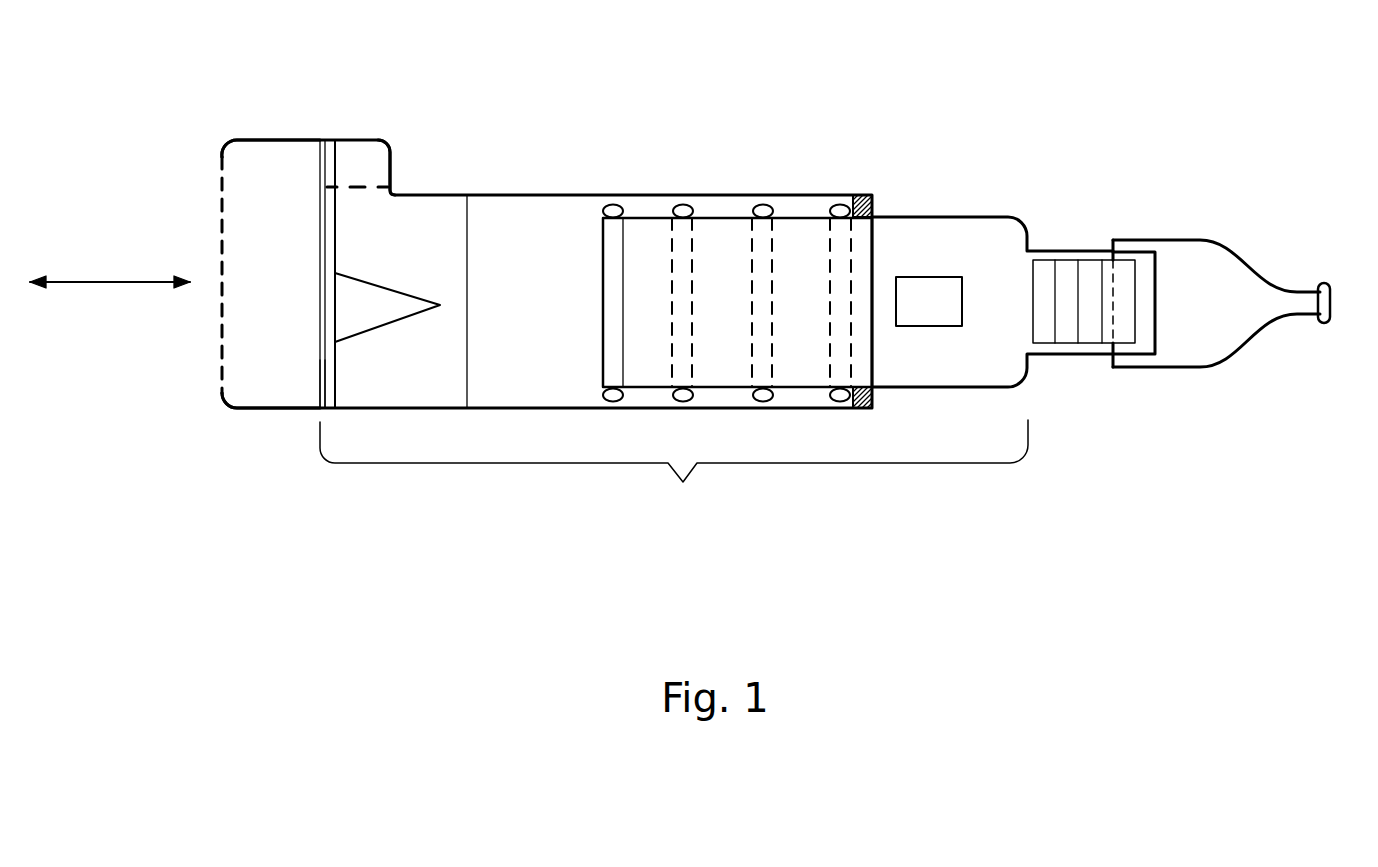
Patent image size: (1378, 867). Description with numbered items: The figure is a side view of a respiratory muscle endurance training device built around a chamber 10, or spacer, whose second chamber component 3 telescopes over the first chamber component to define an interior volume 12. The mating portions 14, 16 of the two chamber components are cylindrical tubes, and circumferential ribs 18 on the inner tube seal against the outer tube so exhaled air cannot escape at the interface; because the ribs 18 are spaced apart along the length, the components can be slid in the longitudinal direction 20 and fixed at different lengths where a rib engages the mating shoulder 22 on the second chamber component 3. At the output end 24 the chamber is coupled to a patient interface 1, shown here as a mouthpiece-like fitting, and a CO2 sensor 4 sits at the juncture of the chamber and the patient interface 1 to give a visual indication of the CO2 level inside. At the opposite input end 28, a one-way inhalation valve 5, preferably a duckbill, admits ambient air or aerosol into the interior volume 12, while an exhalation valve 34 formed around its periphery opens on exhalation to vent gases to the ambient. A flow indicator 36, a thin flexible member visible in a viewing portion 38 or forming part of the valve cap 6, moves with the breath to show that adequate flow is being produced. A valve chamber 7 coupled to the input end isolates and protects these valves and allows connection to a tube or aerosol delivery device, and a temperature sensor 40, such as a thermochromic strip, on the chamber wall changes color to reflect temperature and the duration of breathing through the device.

The patient interface 1 is at (1268, 277).
The second chamber component 3 is at (535, 182).
The CO2 sensor 4 is at (1068, 343).
The one-way inhalation valve 5 is at (422, 297).
The valve cap 6 is at (348, 137).
The valve chamber 7 is at (225, 145).
The chamber 10 is at (683, 482).
The interior volume 12 is at (958, 208).
The mating portion 14 is at (710, 397).
The mating portion 16 is at (723, 195).
The circumferential ribs 18 is at (763, 398).
The longitudinal direction 20 is at (107, 283).
The mating shoulder 22 is at (866, 410).
The output end 24 is at (1087, 354).
The input end 28 is at (331, 383).
The exhalation valve 34 is at (334, 388).
The flow indicator 36 is at (336, 167).
The viewing portion 38 is at (395, 167).
The temperature sensor 40 is at (927, 326).